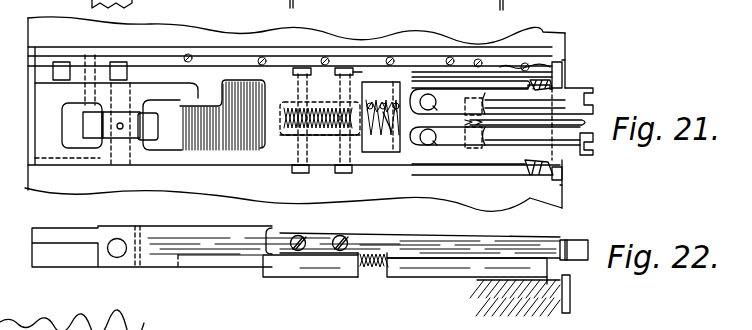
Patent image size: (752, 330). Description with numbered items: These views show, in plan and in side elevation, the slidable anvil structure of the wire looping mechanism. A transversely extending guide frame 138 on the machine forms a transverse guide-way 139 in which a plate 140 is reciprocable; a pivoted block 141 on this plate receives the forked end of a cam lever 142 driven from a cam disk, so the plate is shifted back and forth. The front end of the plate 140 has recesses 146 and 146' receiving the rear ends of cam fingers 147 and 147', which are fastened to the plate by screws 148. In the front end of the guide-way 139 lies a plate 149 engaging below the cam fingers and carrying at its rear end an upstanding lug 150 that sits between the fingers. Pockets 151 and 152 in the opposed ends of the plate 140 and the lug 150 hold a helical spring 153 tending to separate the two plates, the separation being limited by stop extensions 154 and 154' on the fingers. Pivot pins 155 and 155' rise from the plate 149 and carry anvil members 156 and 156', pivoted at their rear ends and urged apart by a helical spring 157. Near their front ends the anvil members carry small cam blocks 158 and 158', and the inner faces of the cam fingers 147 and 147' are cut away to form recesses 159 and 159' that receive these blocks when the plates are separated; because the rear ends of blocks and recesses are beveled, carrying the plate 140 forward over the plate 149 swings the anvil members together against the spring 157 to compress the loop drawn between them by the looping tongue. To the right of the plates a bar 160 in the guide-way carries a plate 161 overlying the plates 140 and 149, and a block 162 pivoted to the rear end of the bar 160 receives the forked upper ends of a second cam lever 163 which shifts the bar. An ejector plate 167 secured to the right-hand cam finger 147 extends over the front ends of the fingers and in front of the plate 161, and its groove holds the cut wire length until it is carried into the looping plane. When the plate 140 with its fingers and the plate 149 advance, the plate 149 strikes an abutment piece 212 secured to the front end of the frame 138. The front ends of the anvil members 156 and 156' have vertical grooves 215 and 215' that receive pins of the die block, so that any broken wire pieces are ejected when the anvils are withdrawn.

In FIG. 21, the guide frame 138 is at (525, 52).
In FIG. 22, the guide frame 138 is at (533, 290).
In FIG. 21, the guide-way 139 is at (175, 52).
In FIG. 21, the plate 140 is at (222, 106).
In FIG. 22, the plate 140 is at (177, 237).
In FIG. 21, the pivoted block 141 is at (139, 140).
In FIG. 21, the cam lever 142 is at (153, 138).
In FIG. 21, the recess 146 is at (319, 76).
In FIG. 21, the recess 146' is at (307, 133).
In FIG. 21, the cam finger 147 is at (482, 60).
In FIG. 22, the cam finger 147' is at (413, 236).
In FIG. 21, the screws 148 is at (353, 72).
In FIG. 22, the screws 148 is at (310, 238).
In FIG. 21, the plate 149 is at (568, 124).
In FIG. 22, the plate 149 is at (453, 272).
In FIG. 21, the upstanding lug 150 is at (394, 152).
In FIG. 22, the upstanding lug 150 is at (378, 240).
In FIG. 21, the pocket 151 is at (281, 126).
In FIG. 21, the pocket 152 is at (393, 102).
In FIG. 21, the helical spring 153 is at (297, 110).
In FIG. 22, the helical spring 153 is at (372, 270).
In FIG. 21, the stop extension 154 is at (471, 79).
In FIG. 21, the stop extension 154' is at (468, 175).
In FIG. 21, the pivot pin 155 is at (444, 101).
In FIG. 21, the pivot pin 155' is at (444, 139).
In FIG. 21, the anvil member 156 is at (487, 100).
In FIG. 21, the anvil member 156' is at (495, 142).
In FIG. 22, the anvil member 156' is at (585, 240).
In FIG. 21, the helical spring 157 is at (482, 123).
In FIG. 21, the cam block 158 is at (567, 75).
In FIG. 21, the cam block 158' is at (562, 174).
In FIG. 21, the recess 159 is at (583, 53).
In FIG. 21, the recess 159' is at (577, 193).
In FIG. 21, the bar 160 is at (145, 55).
In FIG. 21, the plate 161 is at (272, 58).
In FIG. 21, the block 162 is at (80, 88).
In FIG. 21, the cam lever 163 is at (127, 72).
In FIG. 21, the ejector plate 167 is at (536, 66).
In FIG. 22, the abutment piece 212 is at (575, 308).
In FIG. 21, the vertical groove 215 is at (593, 101).
In FIG. 21, the vertical groove 215' is at (604, 146).